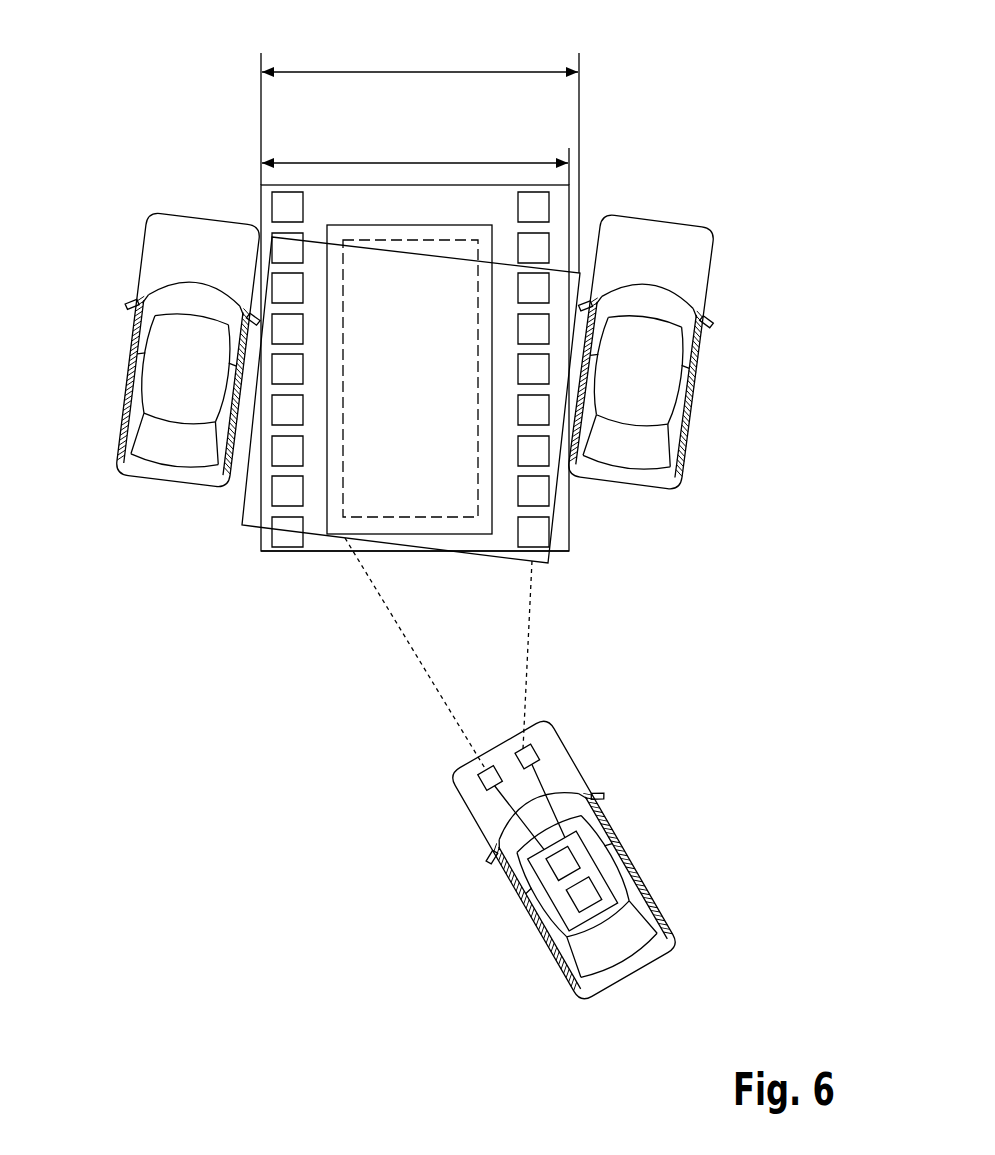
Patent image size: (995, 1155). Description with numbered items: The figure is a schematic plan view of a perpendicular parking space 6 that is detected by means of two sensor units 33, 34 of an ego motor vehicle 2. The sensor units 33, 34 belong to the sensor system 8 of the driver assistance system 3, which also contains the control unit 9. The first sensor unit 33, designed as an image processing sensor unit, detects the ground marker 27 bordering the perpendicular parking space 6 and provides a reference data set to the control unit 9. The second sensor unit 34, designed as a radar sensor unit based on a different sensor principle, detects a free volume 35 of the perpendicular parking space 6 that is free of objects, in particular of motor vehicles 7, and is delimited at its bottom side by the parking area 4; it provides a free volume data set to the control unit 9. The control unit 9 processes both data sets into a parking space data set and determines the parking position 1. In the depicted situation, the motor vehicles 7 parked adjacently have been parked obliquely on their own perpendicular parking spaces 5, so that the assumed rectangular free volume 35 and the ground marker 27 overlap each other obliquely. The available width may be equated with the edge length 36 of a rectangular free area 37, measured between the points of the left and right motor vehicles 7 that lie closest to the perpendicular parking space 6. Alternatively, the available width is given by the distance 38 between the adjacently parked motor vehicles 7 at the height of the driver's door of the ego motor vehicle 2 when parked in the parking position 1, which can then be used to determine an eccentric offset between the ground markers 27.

The parking position 1 is at (343, 378).
The ego motor vehicle 2 is at (470, 815).
The driver assistance system 3 is at (588, 875).
The parking area 4 is at (97, 278).
The perpendicular parking space 5 is at (396, 350).
The perpendicular parking space 6 is at (418, 463).
The motor vehicle 7 is at (183, 200).
The sensor system 8 is at (582, 900).
The control unit 9 is at (565, 868).
The ground marker 27 is at (285, 537).
The first sensor unit 33 is at (490, 782).
The second sensor unit 34 is at (527, 758).
The free volume 35 is at (250, 532).
The edge length 36 is at (413, 163).
The rectangular free area 37 is at (330, 552).
The distance 38 is at (413, 72).